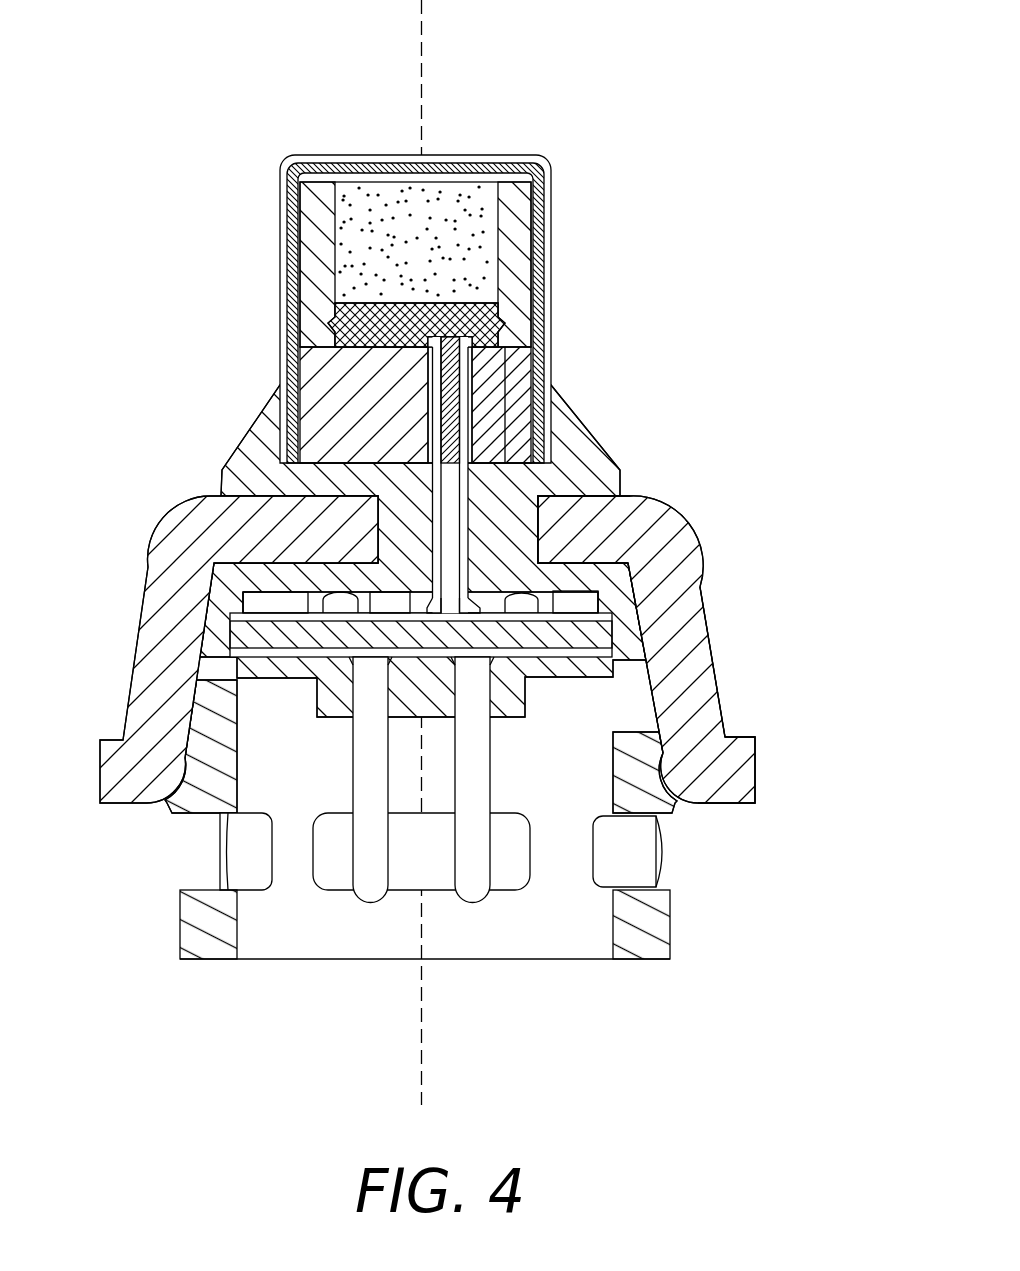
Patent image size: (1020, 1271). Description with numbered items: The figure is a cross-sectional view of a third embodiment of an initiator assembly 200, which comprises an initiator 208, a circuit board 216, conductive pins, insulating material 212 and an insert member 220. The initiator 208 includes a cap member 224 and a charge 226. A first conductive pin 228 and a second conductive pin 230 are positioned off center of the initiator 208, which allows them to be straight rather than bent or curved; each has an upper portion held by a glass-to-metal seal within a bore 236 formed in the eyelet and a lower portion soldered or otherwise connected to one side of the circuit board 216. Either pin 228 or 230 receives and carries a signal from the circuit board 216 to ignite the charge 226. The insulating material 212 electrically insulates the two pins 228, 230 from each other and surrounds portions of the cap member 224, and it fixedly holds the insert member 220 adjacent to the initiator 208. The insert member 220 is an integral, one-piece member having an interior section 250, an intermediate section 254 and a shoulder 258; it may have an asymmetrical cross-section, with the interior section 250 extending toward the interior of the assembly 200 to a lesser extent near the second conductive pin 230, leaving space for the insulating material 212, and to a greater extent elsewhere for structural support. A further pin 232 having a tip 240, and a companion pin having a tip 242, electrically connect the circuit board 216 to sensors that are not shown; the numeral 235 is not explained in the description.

The initiator assembly 200 is at (642, 110).
The initiator 208 is at (387, 331).
The insulating material 212 is at (255, 447).
The circuit board 216 is at (258, 636).
The insert member 220 is at (479, 642).
The cap member 224 is at (552, 218).
The charge 226 is at (452, 190).
The first conductive pin 228 is at (422, 480).
The second conductive pin 230 is at (469, 457).
The pin 232 is at (473, 768).
The terminal sleeve 235 is at (367, 773).
The bore 236 is at (469, 400).
The tip 240 is at (474, 885).
The tip 242 is at (375, 885).
The interior section 250 is at (565, 530).
The intermediate section 254 is at (675, 686).
The shoulder 258 is at (731, 771).